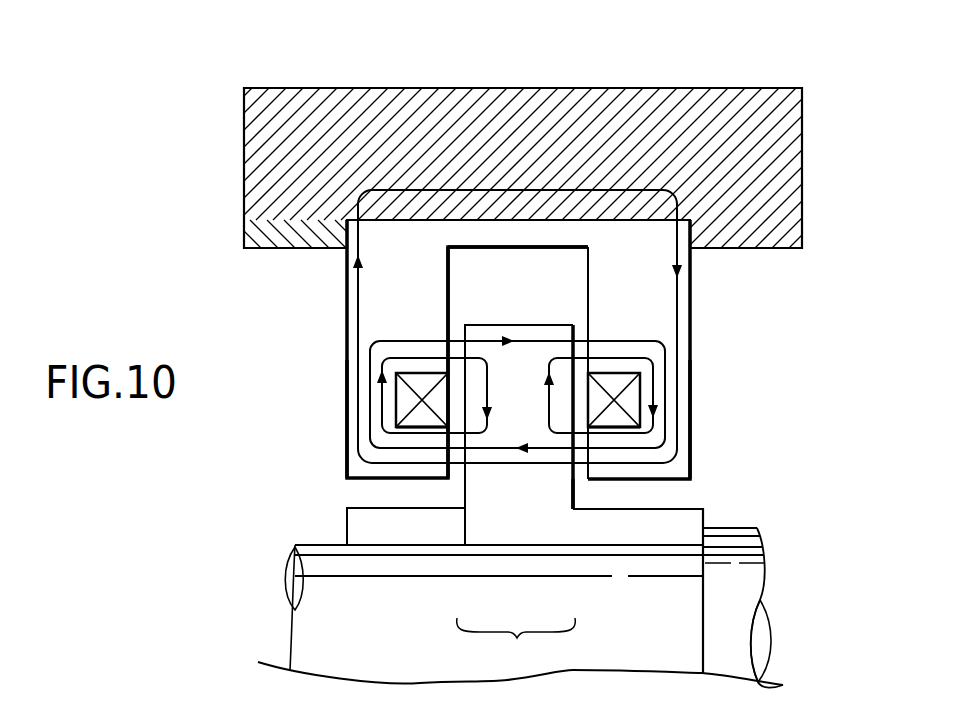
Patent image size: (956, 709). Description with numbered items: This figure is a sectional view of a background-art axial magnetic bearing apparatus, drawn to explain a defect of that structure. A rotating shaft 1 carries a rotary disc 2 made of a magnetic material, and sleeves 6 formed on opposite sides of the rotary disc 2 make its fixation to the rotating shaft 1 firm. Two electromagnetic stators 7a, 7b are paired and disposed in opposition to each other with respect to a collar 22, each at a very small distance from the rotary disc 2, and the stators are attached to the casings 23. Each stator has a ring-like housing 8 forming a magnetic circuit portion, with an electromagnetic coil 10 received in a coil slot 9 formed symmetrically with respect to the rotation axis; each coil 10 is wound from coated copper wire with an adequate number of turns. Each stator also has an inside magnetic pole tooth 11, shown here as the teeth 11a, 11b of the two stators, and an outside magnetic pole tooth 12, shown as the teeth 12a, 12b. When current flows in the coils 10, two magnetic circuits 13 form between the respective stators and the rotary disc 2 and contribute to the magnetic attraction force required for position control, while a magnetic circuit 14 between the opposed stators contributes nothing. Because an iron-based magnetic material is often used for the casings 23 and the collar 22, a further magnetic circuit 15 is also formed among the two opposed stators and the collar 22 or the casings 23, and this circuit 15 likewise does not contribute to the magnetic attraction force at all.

The rotating shaft 1 is at (320, 598).
The rotary disc 2 is at (514, 325).
The sleeves 6 is at (375, 521).
The electromagnetic stator 7a is at (350, 460).
The electromagnetic stator 7b is at (693, 457).
The ring-like housing 8 is at (365, 326).
The coil slot 9 is at (396, 392).
The electromagnetic coil 10 is at (405, 410).
The inside magnetic pole tooth 11 is at (518, 574).
The inside magnetic pole tooth 11a is at (449, 478).
The inside magnetic pole tooth 11b is at (587, 475).
The outside magnetic pole tooth 12 is at (788, 257).
The outside magnetic pole tooth 12a is at (450, 345).
The outside magnetic pole tooth 12b is at (588, 342).
The magnetic circuit 13 is at (412, 430).
The magnetic circuit 14 is at (370, 352).
The magnetic circuit 15 is at (352, 290).
The collar 22 is at (514, 237).
The casing 23 is at (303, 112).